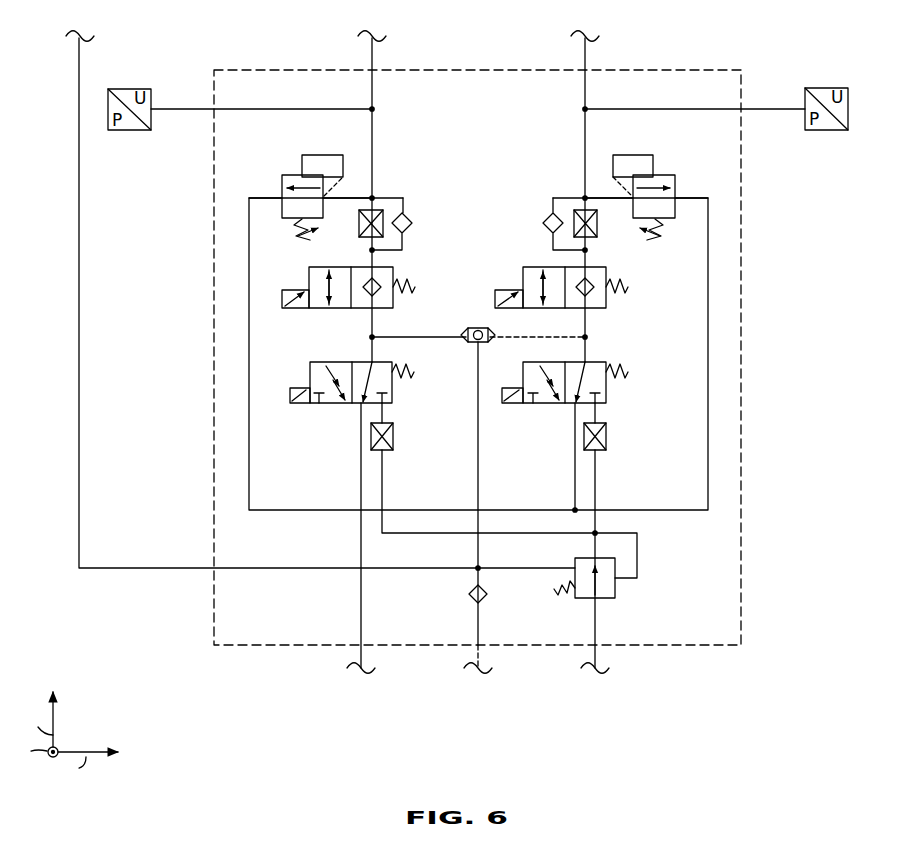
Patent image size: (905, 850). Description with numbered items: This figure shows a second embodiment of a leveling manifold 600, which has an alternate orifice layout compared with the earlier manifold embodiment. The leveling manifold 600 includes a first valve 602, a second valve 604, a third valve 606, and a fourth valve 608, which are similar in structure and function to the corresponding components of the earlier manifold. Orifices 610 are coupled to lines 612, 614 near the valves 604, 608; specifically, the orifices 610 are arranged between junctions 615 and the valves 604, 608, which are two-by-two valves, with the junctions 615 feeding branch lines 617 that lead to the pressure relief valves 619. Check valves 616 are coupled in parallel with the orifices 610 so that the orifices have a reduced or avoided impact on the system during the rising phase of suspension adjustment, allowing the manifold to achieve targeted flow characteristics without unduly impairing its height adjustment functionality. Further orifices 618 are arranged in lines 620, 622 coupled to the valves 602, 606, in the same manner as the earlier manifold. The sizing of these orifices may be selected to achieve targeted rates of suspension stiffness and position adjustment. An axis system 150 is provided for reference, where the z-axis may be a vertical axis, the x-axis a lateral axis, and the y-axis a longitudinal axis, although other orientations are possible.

The leveling manifold 600 is at (214, 72).
The first valve 602 is at (303, 418).
The second valve 604 is at (424, 286).
The third valve 606 is at (530, 413).
The fourth valve 608 is at (630, 309).
The orifices 610 is at (384, 205).
The line 612 is at (372, 143).
The line 614 is at (585, 143).
The junctions 615 is at (372, 196).
The check valves 616 is at (418, 214).
The branch lines 617 is at (348, 200).
The orifices 618 is at (406, 440).
The pressure relief valves 619 is at (276, 175).
The line 620 is at (383, 500).
The line 622 is at (596, 500).
The coordinate system 150 is at (94, 726).